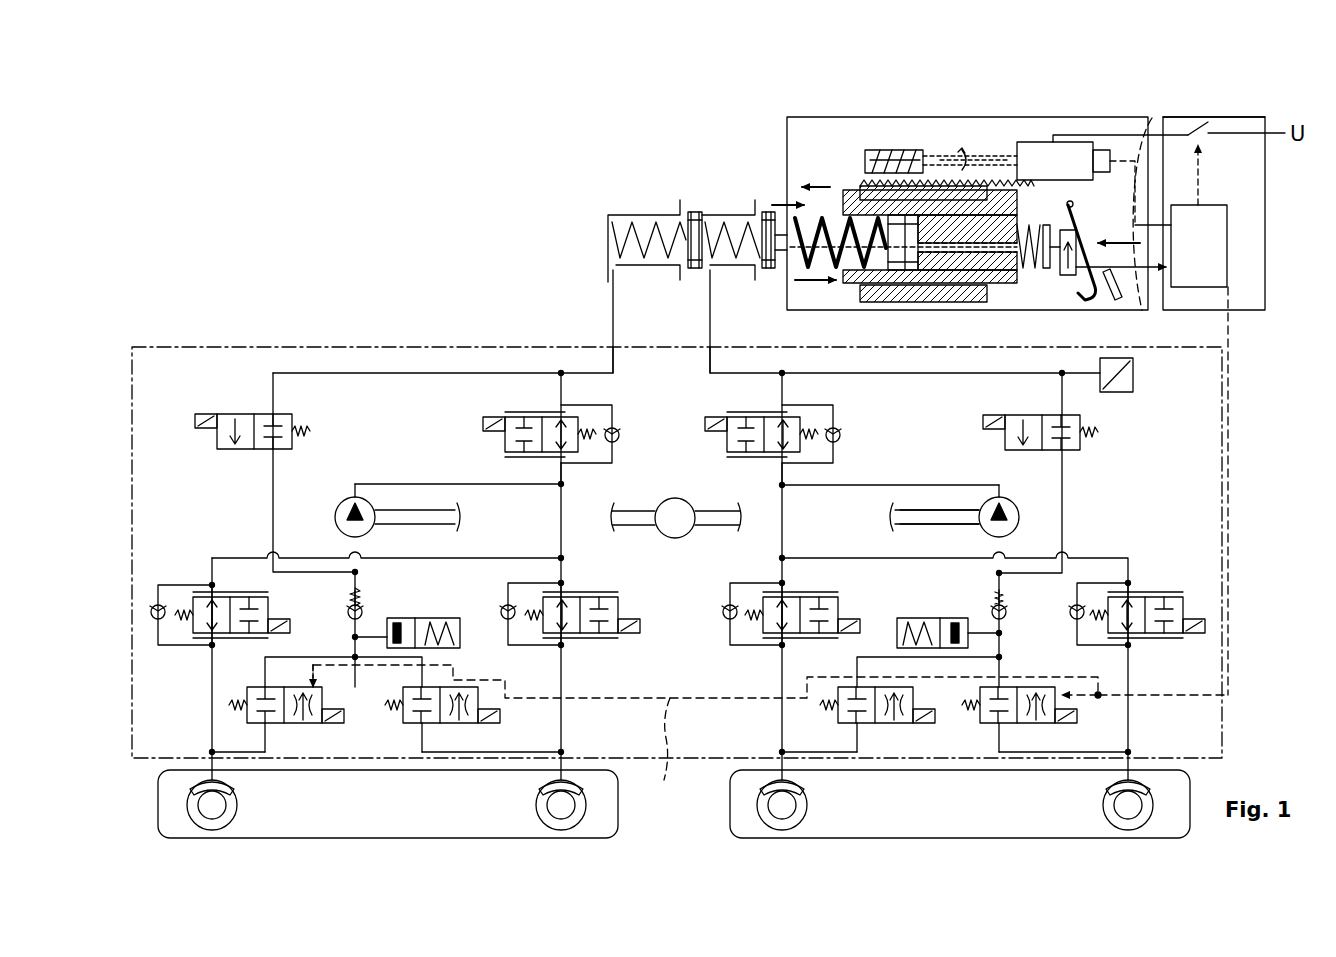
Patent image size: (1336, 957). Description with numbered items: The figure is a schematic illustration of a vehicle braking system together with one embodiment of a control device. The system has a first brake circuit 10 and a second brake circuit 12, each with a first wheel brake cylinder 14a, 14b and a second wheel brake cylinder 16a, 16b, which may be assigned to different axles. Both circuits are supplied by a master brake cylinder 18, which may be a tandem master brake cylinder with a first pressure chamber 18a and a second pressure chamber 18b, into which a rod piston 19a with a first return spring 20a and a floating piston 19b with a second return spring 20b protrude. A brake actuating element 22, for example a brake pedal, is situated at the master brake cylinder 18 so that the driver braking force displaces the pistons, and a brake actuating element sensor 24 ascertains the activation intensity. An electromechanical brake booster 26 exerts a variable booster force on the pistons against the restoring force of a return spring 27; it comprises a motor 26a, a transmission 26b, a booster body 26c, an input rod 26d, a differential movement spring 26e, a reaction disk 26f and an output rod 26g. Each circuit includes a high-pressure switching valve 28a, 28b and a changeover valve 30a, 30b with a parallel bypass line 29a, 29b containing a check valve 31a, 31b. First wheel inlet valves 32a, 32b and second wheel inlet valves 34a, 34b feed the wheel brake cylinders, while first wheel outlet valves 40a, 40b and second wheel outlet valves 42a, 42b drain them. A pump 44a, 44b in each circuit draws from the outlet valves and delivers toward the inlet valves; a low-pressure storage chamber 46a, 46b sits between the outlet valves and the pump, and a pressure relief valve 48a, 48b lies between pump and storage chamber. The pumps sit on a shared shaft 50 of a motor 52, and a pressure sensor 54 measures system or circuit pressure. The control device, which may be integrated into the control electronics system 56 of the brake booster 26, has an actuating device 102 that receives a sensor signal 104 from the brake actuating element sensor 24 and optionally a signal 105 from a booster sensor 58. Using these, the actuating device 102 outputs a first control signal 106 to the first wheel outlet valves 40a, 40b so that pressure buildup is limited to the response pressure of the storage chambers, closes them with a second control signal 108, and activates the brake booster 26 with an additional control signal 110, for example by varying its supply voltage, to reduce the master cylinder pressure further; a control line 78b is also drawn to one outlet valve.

The first brake circuit 10 is at (772, 702).
The second brake circuit 12 is at (576, 702).
The first wheel brake cylinder 14a is at (1108, 790).
The first wheel brake cylinder 14b is at (232, 785).
The second wheel brake cylinder 16a is at (802, 787).
The second wheel brake cylinder 16b is at (545, 786).
The master brake cylinder 18 is at (605, 217).
The first pressure chamber 18a is at (745, 270).
The second pressure chamber 18b is at (660, 270).
The first displaceable piston 19a is at (767, 213).
The second displaceable piston 19b is at (694, 213).
The first return spring 20a is at (725, 232).
The second return spring 20b is at (632, 232).
The brake actuating element 22 is at (1100, 302).
The brake actuating element sensor 24 is at (1068, 277).
The brake booster 26 is at (926, 313).
The motor 26a is at (1040, 142).
The transmission 26b is at (878, 128).
The booster body 26c is at (945, 302).
The input rod 26d is at (1046, 270).
The differential movement spring 26e is at (1030, 275).
The reaction disk 26f is at (1000, 213).
The output rod 26g is at (900, 302).
The return spring 27 is at (865, 280).
The high-pressure switching valve 28a is at (1005, 438).
The high-pressure switching valve 28b is at (217, 437).
The bypass line 29a is at (800, 465).
The bypass line 29b is at (580, 463).
The changeover valve 30a is at (727, 441).
The changeover valve 30b is at (505, 441).
The check valve 31a is at (840, 430).
The check valve 31b is at (619, 430).
The first wheel inlet valve 32a is at (1165, 633).
The first wheel inlet valve 32b is at (237, 590).
The second wheel inlet valve 34a is at (810, 633).
The second wheel inlet valve 34b is at (597, 633).
The first wheel outlet valve 40a is at (1040, 723).
The first wheel outlet valve 40b is at (310, 723).
The second wheel outlet valve 42a is at (895, 723).
The second wheel outlet valve 42b is at (460, 723).
The pump 44a is at (1015, 505).
The pump 44b is at (339, 505).
The storage chamber 46a is at (905, 618).
The storage chamber 46b is at (445, 618).
The pressure relief valve 48a is at (990, 600).
The pressure relief valve 48b is at (365, 608).
The shared shaft 50 is at (963, 524).
The motor 52 is at (668, 530).
The pressure sensor 54 is at (1133, 375).
The control electronics system 56 is at (1262, 312).
The sensor 58 is at (1103, 150).
The control line 78b is at (320, 690).
The actuating device 102 is at (1200, 287).
The sensor signal 104 is at (1140, 312).
The signal 105 is at (1142, 135).
The first control signal 106 is at (1228, 490).
The second control signal 108 is at (678, 751).
The additional control signal 110 is at (1200, 170).